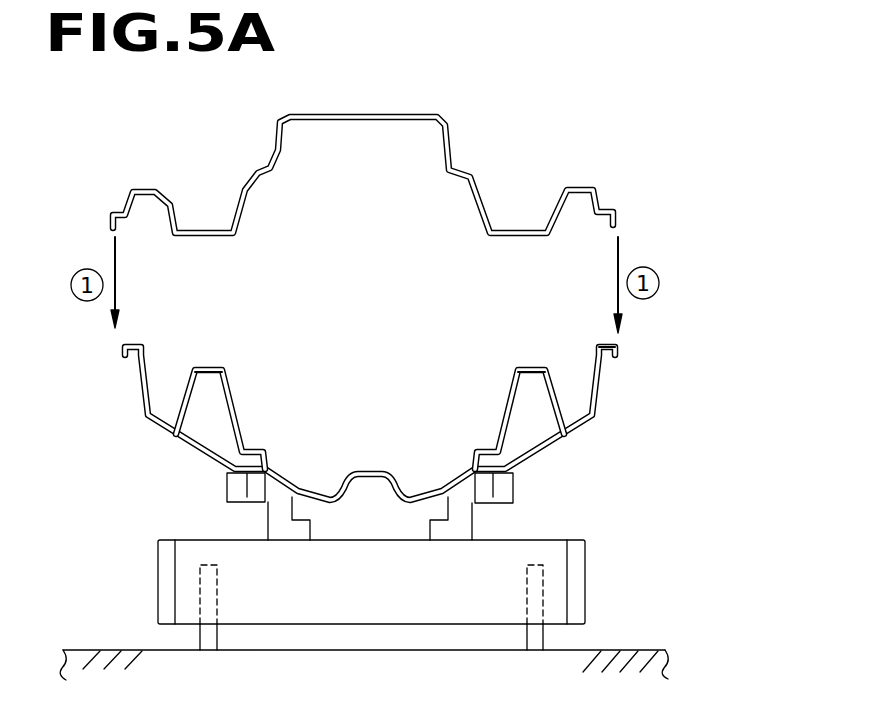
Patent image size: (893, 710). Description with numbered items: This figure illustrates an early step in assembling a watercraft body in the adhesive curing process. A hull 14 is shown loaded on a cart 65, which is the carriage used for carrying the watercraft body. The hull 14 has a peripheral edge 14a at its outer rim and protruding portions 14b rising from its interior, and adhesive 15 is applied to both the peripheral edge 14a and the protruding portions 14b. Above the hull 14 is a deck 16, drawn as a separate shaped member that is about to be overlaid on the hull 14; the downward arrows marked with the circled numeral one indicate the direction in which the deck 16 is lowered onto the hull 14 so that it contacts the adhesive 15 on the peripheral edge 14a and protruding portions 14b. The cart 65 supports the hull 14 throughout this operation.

The hull 14 is at (602, 402).
The peripheral edge 14a is at (618, 353).
The protruding portions 14b is at (232, 378).
The adhesive 15 is at (205, 368).
The deck 16 is at (403, 113).
The cart 65 is at (585, 563).